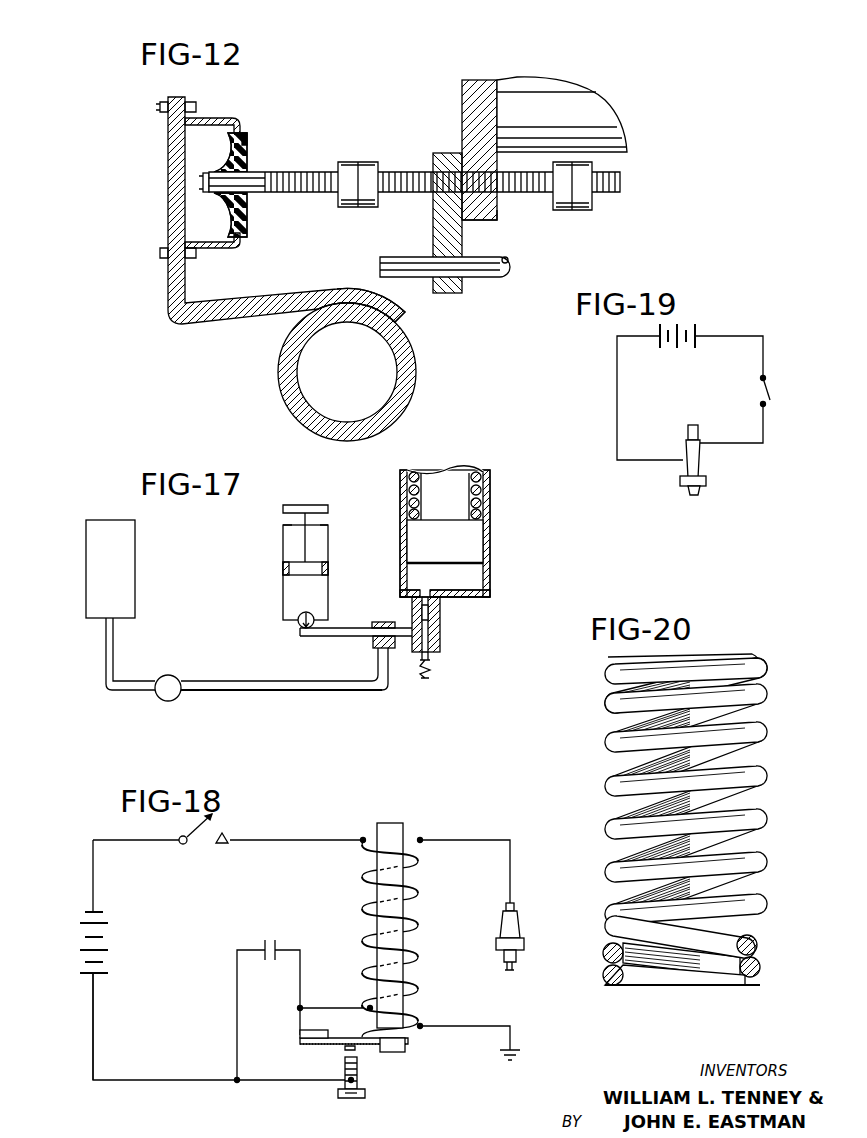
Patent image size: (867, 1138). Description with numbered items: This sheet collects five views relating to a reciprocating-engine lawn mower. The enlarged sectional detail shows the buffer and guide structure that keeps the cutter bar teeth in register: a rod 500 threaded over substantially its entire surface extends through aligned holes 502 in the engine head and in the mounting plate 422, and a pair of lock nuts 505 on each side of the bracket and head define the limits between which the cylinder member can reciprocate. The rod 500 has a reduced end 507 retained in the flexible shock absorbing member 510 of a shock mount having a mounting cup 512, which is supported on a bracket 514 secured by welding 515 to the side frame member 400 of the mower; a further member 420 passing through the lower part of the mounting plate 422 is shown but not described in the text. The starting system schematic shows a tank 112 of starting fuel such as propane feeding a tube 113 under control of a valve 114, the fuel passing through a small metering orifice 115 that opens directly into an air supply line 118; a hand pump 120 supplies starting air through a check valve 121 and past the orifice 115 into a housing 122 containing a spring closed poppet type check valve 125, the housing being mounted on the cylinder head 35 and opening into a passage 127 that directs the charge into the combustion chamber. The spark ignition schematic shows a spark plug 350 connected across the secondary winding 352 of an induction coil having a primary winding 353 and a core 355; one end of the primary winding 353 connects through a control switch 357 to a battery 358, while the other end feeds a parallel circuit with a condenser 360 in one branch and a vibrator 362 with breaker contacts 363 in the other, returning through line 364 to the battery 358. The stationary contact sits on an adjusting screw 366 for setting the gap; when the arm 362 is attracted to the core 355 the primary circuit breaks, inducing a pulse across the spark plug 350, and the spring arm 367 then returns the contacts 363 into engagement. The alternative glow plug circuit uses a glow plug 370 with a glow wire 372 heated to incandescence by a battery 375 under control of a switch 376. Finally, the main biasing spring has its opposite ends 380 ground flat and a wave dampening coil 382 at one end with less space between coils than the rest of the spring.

In FIG. 12, the cylinder head 35 is at (475, 84).
In FIG. 17, the cylinder head 35 is at (468, 588).
In FIG. 17, the tank 112 is at (128, 581).
In FIG. 17, the tube 113 is at (240, 692).
In FIG. 17, the valve 114 is at (168, 675).
In FIG. 17, the metering orifice 115 is at (392, 652).
In FIG. 17, the air supply line 118 is at (352, 640).
In FIG. 17, the hand pump 120 is at (283, 548).
In FIG. 17, the check valve 121 is at (298, 615).
In FIG. 17, the housing 122 is at (441, 636).
In FIG. 17, the poppet type check valve 125 is at (418, 620).
In FIG. 17, the passage 127 is at (436, 602).
In FIG. 18, the spark plug 350 is at (504, 924).
In FIG. 18, the secondary winding 352 is at (418, 878).
In FIG. 18, the primary winding 353 is at (361, 909).
In FIG. 18, the core 355 is at (390, 825).
In FIG. 18, the control switch 357 is at (214, 827).
In FIG. 18, the battery 358 is at (100, 910).
In FIG. 18, the condenser 360 is at (266, 940).
In FIG. 18, the vibrator 362 is at (370, 1052).
In FIG. 18, the breaker contacts 363 is at (335, 1053).
In FIG. 18, the line 364 is at (95, 1028).
In FIG. 18, the adjusting screw 366 is at (358, 1078).
In FIG. 18, the spring arm 367 is at (390, 1040).
In FIG. 19, the glow plug 370 is at (700, 460).
In FIG. 19, the glow wire 372 is at (695, 494).
In FIG. 19, the battery 375 is at (667, 355).
In FIG. 19, the switch 376 is at (774, 398).
In FIG. 20, the ends 380 is at (685, 657).
In FIG. 20, the wave dampening coil 382 is at (651, 825).
In FIG. 12, the side frame member 400 is at (285, 385).
In FIG. 12, the rod 420 is at (488, 278).
In FIG. 12, the mounting plate 422 is at (444, 153).
In FIG. 12, the rod 500 is at (396, 170).
In FIG. 12, the aligned holes 502 is at (498, 218).
In FIG. 12, the lock nuts 505 is at (364, 213).
In FIG. 12, the reduced end 507 is at (252, 182).
In FIG. 12, the flexible shock absorbing member 510 is at (247, 135).
In FIG. 12, the mounting cup 512 is at (222, 118).
In FIG. 12, the bracket 514 is at (177, 322).
In FIG. 12, the welding 515 is at (340, 302).